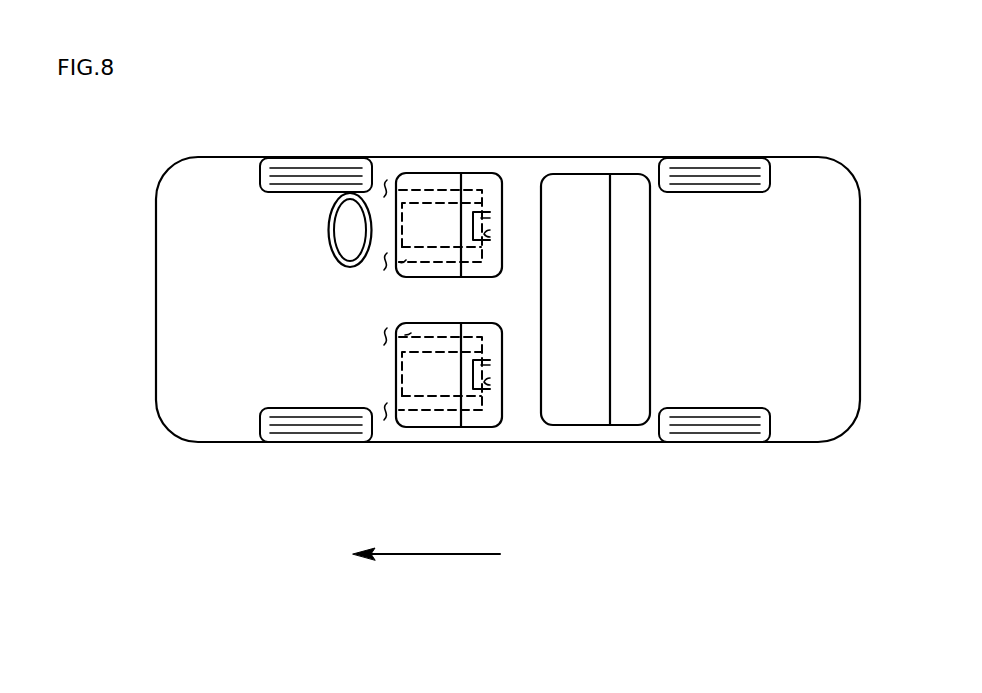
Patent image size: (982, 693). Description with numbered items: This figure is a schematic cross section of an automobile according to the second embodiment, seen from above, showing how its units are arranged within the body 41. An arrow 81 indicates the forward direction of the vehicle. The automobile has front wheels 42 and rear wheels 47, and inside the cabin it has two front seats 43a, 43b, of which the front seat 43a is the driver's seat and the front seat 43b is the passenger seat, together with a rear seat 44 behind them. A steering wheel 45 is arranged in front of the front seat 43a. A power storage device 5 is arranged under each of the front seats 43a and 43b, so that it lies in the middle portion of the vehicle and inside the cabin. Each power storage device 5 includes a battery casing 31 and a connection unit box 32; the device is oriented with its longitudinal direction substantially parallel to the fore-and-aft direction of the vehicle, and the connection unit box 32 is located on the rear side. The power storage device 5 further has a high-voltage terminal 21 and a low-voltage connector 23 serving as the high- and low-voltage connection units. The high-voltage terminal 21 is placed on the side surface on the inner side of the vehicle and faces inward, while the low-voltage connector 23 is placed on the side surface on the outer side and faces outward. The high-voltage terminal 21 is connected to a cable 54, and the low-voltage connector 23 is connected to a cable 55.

The power storage device 5 is at (466, 300).
The high-voltage terminal 21 is at (491, 236).
The low-voltage connector 23 is at (491, 228).
The battery casing 31 is at (452, 217).
The connection unit box 32 is at (483, 217).
The body 41 is at (788, 158).
The front wheels 42 is at (276, 170).
The front seat 43a is at (429, 178).
The front seat 43b is at (430, 421).
The rear seat 44 is at (632, 425).
The steering wheel 45 is at (330, 232).
The rear wheels 47 is at (712, 170).
The cable 54 is at (406, 262).
The cable 55 is at (385, 178).
The arrow 81 is at (425, 556).